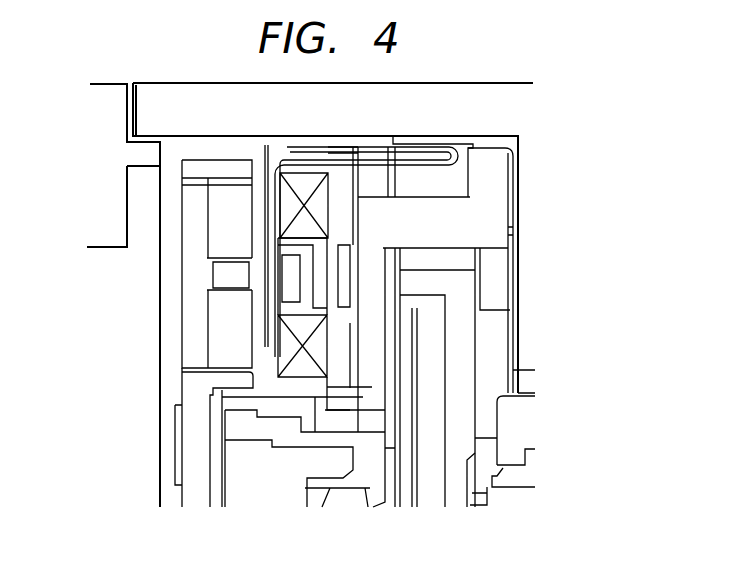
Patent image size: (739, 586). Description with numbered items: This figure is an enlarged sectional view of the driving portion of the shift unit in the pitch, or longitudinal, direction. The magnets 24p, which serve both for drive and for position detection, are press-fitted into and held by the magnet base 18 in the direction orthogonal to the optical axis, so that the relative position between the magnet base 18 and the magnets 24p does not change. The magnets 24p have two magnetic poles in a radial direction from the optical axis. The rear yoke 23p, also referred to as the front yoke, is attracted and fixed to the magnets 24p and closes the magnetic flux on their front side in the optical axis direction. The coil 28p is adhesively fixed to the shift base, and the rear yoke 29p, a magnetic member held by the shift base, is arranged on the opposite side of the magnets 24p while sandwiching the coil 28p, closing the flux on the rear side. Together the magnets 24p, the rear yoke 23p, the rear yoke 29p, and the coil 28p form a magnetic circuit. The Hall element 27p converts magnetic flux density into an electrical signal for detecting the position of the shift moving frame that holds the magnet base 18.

The magnet base 18 is at (208, 431).
The rear yoke 23p is at (192, 288).
The magnets 24p is at (220, 358).
The Hall element 27p is at (292, 282).
The coil 28p is at (305, 363).
The rear yoke 29p is at (347, 325).